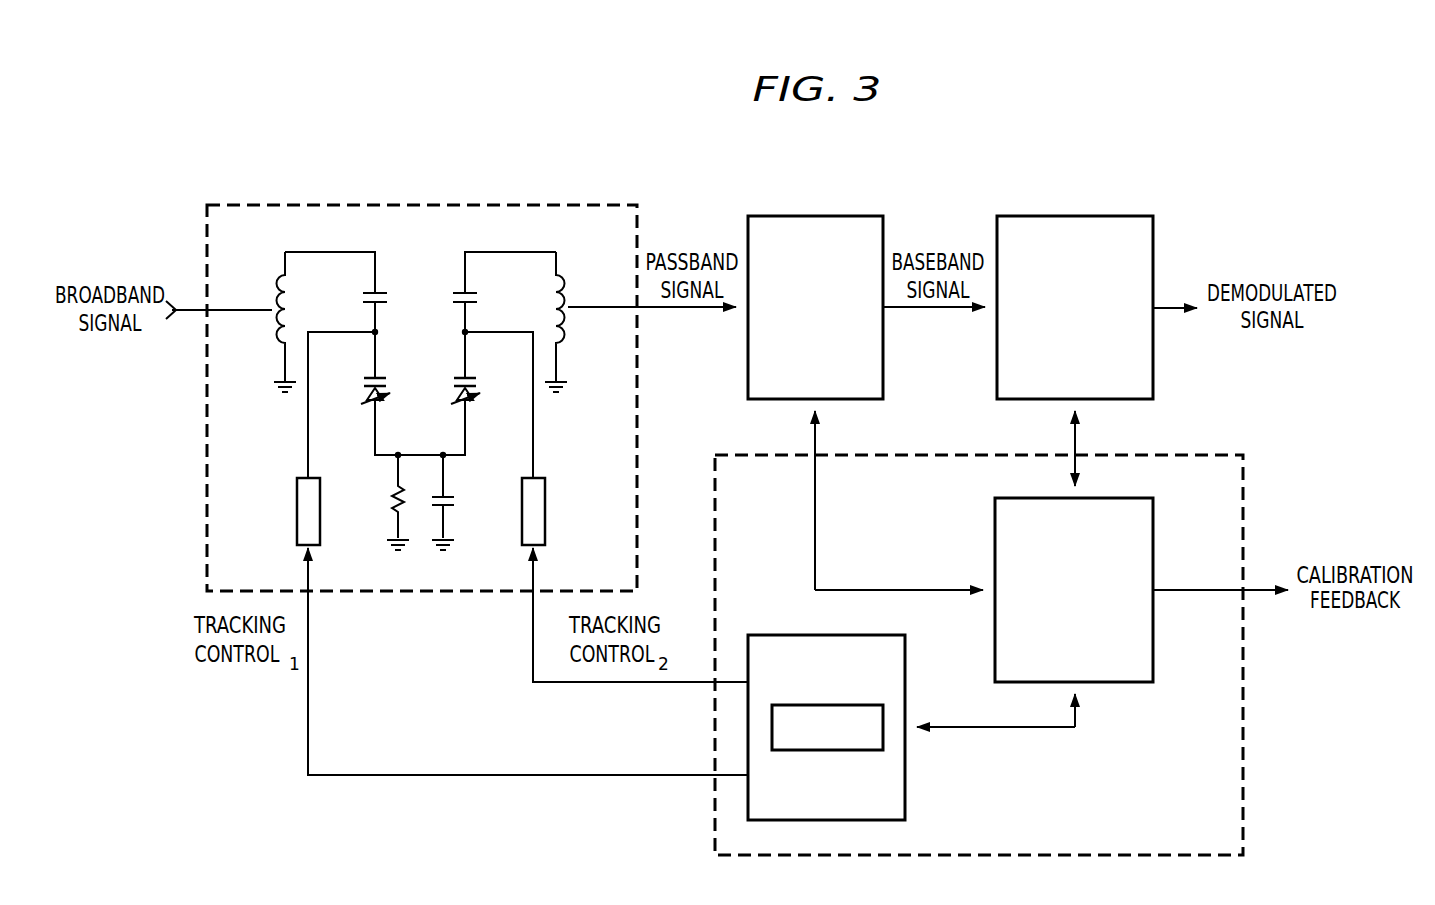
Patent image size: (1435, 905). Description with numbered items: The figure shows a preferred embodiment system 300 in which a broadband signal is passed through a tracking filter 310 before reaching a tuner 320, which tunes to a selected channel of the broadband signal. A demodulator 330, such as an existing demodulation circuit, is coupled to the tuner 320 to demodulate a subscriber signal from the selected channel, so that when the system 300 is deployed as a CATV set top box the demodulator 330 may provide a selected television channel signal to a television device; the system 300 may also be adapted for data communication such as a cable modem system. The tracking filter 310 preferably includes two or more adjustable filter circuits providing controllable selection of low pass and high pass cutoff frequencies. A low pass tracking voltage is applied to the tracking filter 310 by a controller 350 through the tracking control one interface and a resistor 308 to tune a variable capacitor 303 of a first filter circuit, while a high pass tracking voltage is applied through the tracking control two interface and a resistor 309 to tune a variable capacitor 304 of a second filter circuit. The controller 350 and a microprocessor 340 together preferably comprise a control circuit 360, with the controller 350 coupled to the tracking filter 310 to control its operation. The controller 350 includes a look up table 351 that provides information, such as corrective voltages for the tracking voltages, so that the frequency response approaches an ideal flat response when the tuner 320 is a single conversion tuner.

The system 300 is at (560, 152).
The tracking filter 310 is at (398, 205).
The variable capacitor 303 is at (374, 405).
The variable capacitor 304 is at (466, 405).
The resistor 308 is at (297, 512).
The resistor 309 is at (546, 512).
The tuner 320 is at (815, 216).
The demodulator 330 is at (1065, 216).
The microprocessor 340 is at (1153, 637).
The controller 350 is at (905, 773).
The look up table 351 is at (827, 752).
The control circuit 360 is at (1243, 762).